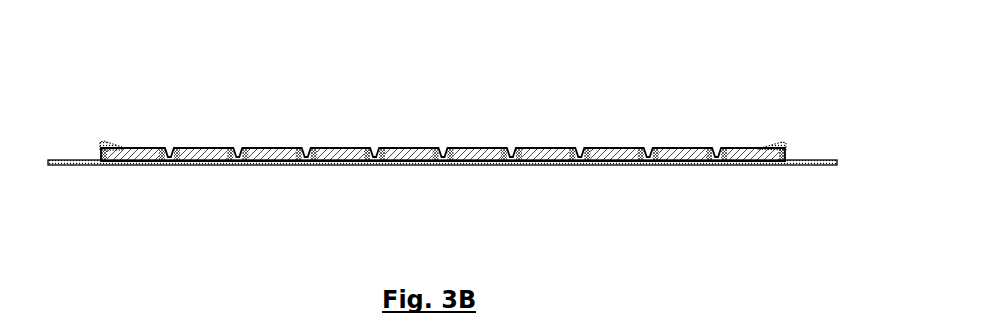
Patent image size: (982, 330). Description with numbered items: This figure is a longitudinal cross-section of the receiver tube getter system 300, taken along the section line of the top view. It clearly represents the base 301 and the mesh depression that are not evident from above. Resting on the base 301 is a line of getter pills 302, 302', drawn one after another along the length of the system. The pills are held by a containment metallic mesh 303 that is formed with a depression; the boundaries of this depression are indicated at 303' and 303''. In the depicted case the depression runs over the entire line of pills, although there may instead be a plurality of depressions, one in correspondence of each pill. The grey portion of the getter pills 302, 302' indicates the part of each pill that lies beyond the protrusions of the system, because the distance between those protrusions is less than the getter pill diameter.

The cable assembly 300 is at (779, 128).
The base 301 is at (402, 163).
The getter pill 302 is at (281, 109).
The getter pill 302' is at (361, 111).
The containment metallic mesh 303 is at (90, 109).
The depression boundary of the containment metallic mesh 303' is at (151, 120).
The depression boundary of the containment metallic mesh 303'' is at (730, 109).